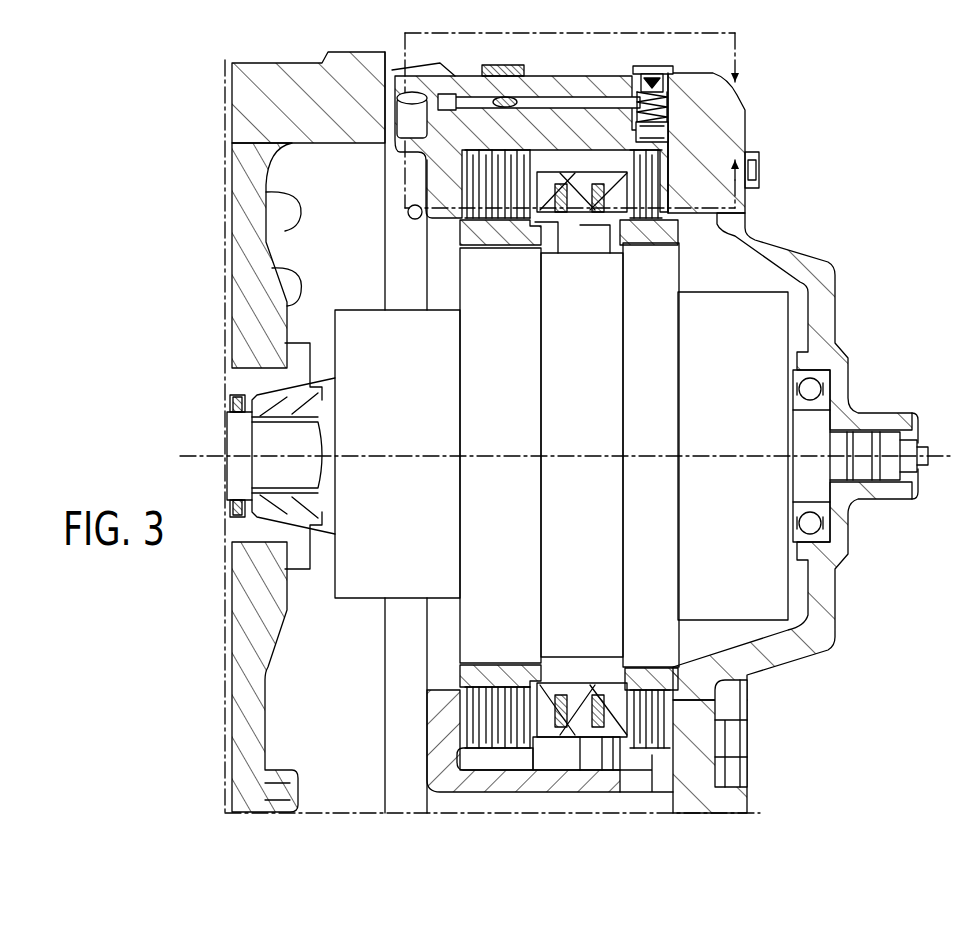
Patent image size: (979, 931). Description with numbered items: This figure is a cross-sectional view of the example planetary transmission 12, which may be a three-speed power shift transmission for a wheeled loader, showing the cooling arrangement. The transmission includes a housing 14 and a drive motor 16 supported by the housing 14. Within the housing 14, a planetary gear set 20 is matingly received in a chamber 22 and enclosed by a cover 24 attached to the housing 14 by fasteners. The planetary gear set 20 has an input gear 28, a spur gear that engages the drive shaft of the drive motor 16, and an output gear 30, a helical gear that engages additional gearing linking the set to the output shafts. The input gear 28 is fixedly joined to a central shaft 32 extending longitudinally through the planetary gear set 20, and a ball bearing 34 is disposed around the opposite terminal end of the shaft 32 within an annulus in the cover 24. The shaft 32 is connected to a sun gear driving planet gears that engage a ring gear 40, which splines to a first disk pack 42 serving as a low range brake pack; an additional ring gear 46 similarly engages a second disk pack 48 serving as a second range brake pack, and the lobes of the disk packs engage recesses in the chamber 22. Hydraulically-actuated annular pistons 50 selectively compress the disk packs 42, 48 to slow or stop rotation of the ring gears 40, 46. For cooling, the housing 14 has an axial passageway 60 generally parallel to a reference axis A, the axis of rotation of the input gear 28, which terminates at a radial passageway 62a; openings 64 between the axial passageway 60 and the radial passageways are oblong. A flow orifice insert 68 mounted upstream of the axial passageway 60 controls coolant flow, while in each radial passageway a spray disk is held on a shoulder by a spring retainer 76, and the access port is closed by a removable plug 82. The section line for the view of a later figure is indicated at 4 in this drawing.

The planetary transmission 12 is at (828, 113).
The housing 14 is at (292, 68).
The drive motor 16 is at (232, 262).
The planetary gear set 20 is at (690, 655).
The chamber 22 is at (478, 775).
The cover 24 is at (770, 650).
The input gear 28 is at (235, 426).
The output gear 30 is at (368, 598).
The central shaft 32 is at (862, 470).
The ball bearing 34 is at (820, 540).
The ring gear 40 is at (460, 236).
The first disk pack 42 is at (508, 157).
The additional ring gear 46 is at (664, 232).
The second disk pack 48 is at (642, 157).
The annular piston 50 is at (603, 236).
The axial passageway 60 is at (560, 90).
The radial passageway 62a is at (692, 118).
The opening 64 is at (518, 98).
The flow orifice insert 68 is at (450, 96).
The retainer 76 is at (656, 98).
The plug 82 is at (503, 64).
The section line 4- 4 is at (587, 125).
The reference axis A is at (920, 456).